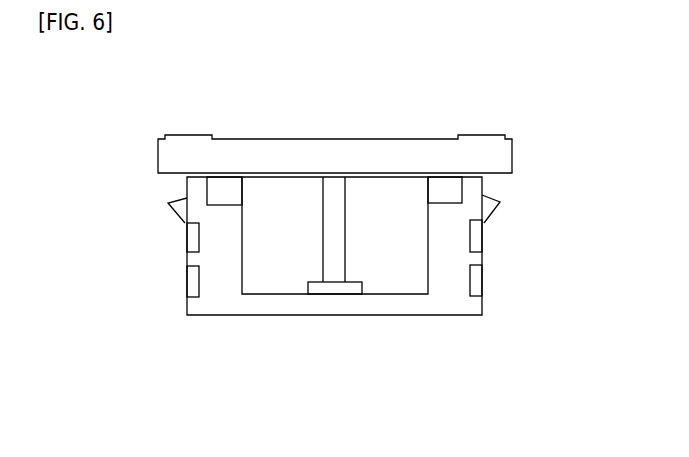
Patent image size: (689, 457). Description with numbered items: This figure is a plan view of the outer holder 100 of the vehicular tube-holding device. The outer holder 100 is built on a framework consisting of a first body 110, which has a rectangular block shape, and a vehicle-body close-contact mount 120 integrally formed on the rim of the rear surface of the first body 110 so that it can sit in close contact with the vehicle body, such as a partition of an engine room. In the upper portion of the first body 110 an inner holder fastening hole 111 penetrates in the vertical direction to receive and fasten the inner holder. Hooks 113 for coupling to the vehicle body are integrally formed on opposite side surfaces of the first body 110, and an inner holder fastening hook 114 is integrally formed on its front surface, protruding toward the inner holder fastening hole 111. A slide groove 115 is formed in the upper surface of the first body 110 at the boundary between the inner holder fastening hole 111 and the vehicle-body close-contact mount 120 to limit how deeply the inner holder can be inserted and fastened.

The outer holder 100 is at (317, 245).
The first body 110 is at (378, 245).
The inner holder fastening hole 111 is at (378, 192).
The hooks 113 is at (500, 201).
The inner holder fastening hook 114 is at (333, 288).
The slide groove 115 is at (447, 188).
The vehicle-body close-contact mount 120 is at (167, 150).